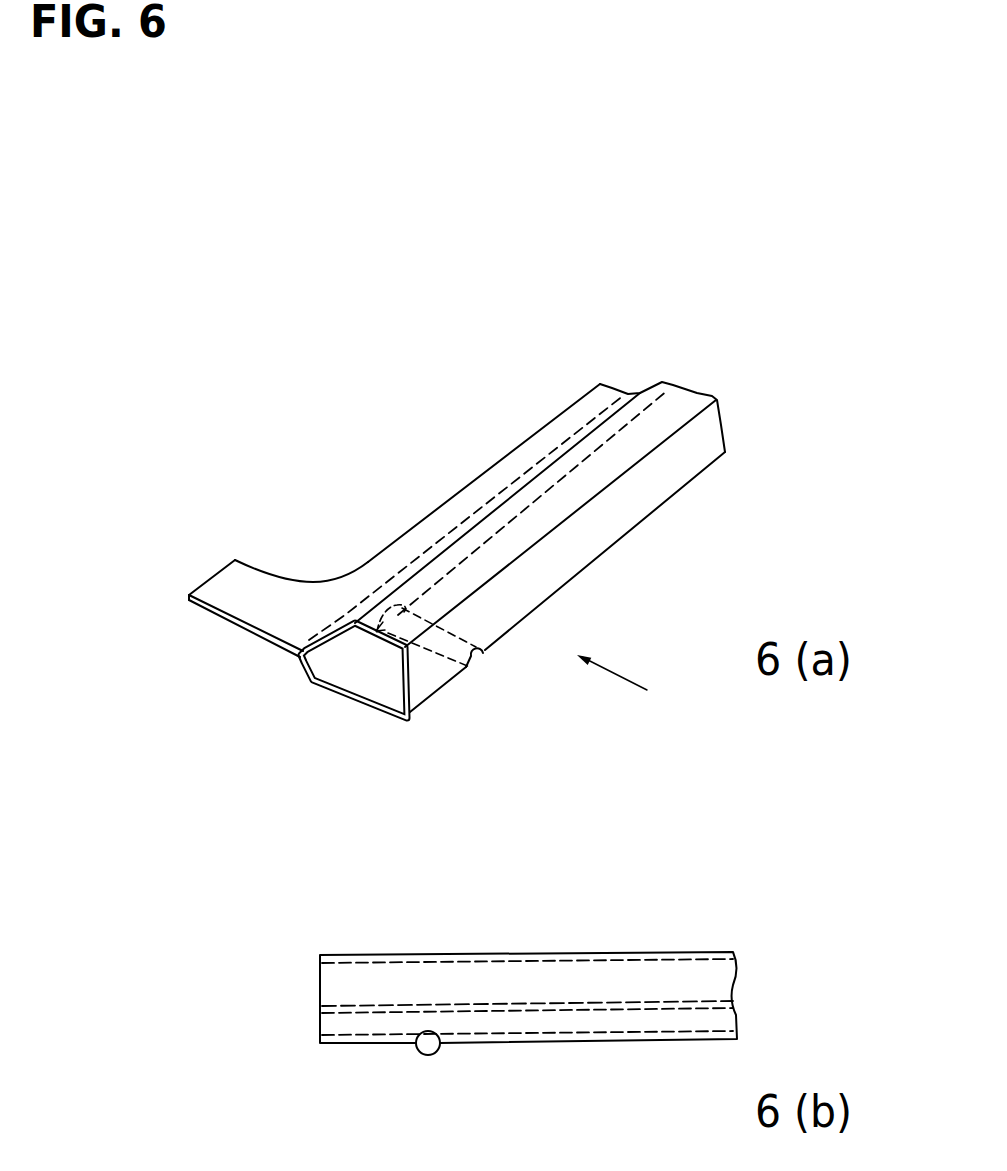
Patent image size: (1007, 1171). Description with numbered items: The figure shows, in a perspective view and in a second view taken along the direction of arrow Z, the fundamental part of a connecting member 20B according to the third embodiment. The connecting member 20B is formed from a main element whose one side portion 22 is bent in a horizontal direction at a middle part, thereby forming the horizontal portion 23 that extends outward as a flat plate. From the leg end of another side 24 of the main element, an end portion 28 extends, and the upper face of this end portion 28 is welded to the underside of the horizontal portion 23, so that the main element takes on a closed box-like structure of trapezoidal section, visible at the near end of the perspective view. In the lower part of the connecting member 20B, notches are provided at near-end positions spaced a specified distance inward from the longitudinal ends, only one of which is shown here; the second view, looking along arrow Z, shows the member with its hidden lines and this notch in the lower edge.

The connecting member 20B is at (465, 529).
The one side portion 22 is at (336, 623).
The horizontal portion 23 is at (315, 603).
The another side 24 is at (547, 580).
The end portion 28 is at (307, 655).
The arrow Z is at (624, 682).